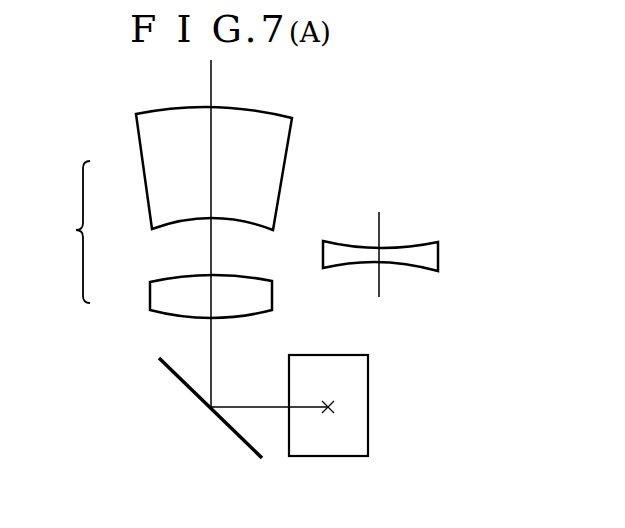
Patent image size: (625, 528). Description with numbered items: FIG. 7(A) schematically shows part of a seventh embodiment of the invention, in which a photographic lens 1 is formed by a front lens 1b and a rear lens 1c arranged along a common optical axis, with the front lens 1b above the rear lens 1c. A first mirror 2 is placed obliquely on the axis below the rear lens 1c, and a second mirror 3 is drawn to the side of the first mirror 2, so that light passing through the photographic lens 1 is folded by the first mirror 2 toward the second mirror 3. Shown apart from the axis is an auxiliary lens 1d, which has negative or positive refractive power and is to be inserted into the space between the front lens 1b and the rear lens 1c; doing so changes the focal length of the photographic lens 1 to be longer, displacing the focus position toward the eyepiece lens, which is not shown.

The photographic lens 1 is at (74, 232).
The front lens 1b is at (153, 193).
The rear lens 1c is at (150, 290).
The auxiliary lens 1d is at (428, 253).
The first mirror 2 is at (172, 373).
The second mirror 3 is at (370, 425).